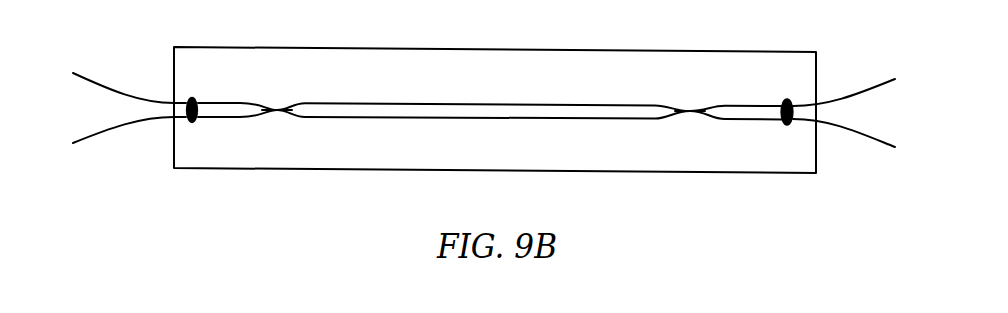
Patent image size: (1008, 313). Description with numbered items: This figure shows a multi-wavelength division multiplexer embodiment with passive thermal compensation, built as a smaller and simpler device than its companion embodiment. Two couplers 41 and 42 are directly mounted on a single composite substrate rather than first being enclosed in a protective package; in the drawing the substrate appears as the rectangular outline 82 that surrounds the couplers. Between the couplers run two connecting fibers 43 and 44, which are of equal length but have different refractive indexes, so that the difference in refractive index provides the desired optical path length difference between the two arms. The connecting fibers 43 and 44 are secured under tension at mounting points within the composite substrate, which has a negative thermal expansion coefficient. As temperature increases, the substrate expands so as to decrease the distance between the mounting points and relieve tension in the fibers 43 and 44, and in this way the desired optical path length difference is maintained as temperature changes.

The coupler 41 is at (276, 104).
The coupler 42 is at (690, 106).
The connecting fiber 43 is at (397, 103).
The connecting fiber 44 is at (408, 118).
The housing 82 is at (707, 171).